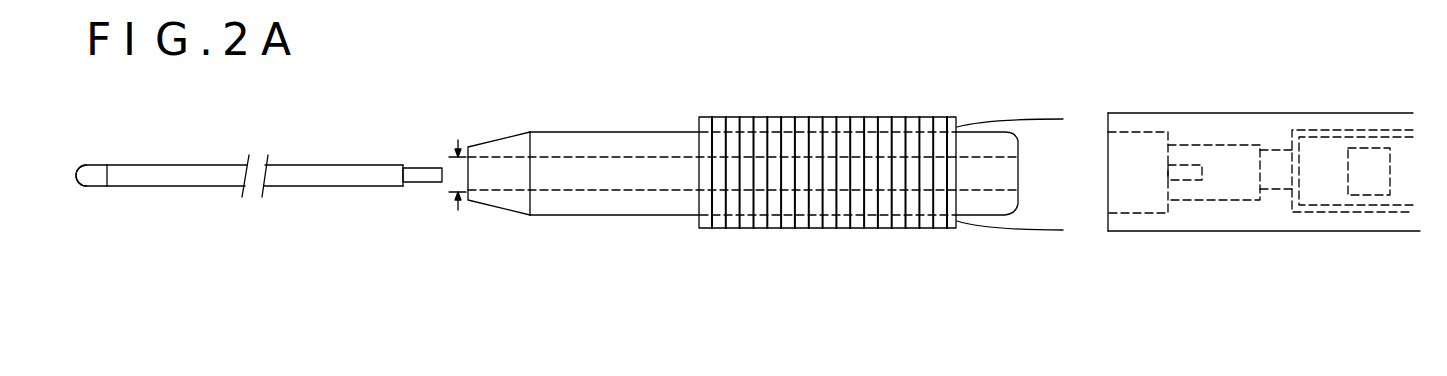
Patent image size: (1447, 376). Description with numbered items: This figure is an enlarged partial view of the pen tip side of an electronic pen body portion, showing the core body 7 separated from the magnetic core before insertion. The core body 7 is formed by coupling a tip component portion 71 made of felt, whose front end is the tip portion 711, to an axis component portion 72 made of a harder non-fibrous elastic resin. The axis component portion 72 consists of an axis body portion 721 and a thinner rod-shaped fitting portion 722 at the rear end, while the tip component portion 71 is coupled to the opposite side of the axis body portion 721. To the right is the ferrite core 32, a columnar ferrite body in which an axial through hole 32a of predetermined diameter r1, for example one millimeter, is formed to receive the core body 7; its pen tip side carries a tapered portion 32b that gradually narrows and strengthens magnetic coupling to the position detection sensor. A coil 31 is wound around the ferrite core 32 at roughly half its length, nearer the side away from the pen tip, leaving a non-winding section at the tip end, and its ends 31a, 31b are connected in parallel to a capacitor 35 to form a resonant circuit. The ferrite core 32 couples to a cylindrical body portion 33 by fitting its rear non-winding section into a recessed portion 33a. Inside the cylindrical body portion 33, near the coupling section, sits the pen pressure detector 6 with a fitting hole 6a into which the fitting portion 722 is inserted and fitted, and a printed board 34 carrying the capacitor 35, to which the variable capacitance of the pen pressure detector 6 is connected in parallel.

The core body 7 is at (244, 170).
The tip component portion 71 is at (91, 173).
The tip portion 711 is at (82, 187).
The axis component portion 72 is at (274, 183).
The axis body portion 721 is at (307, 175).
The fitting portion 722 is at (418, 182).
The predetermined diameter r1 is at (452, 175).
The coil 31 is at (894, 178).
The one end of the coil 31a is at (1049, 118).
The one end of the coil 31b is at (1050, 232).
The ferrite core 32 is at (743, 176).
The through hole 32a is at (615, 175).
The tapered portion 32b is at (505, 212).
The cylindrical body portion 33 is at (1264, 168).
The recessed portion 33a is at (1137, 152).
The pen pressure detector 6 is at (1230, 167).
The fitting hole 6a is at (1185, 173).
The printed board 34 is at (1325, 187).
The capacitor 35 is at (1370, 182).